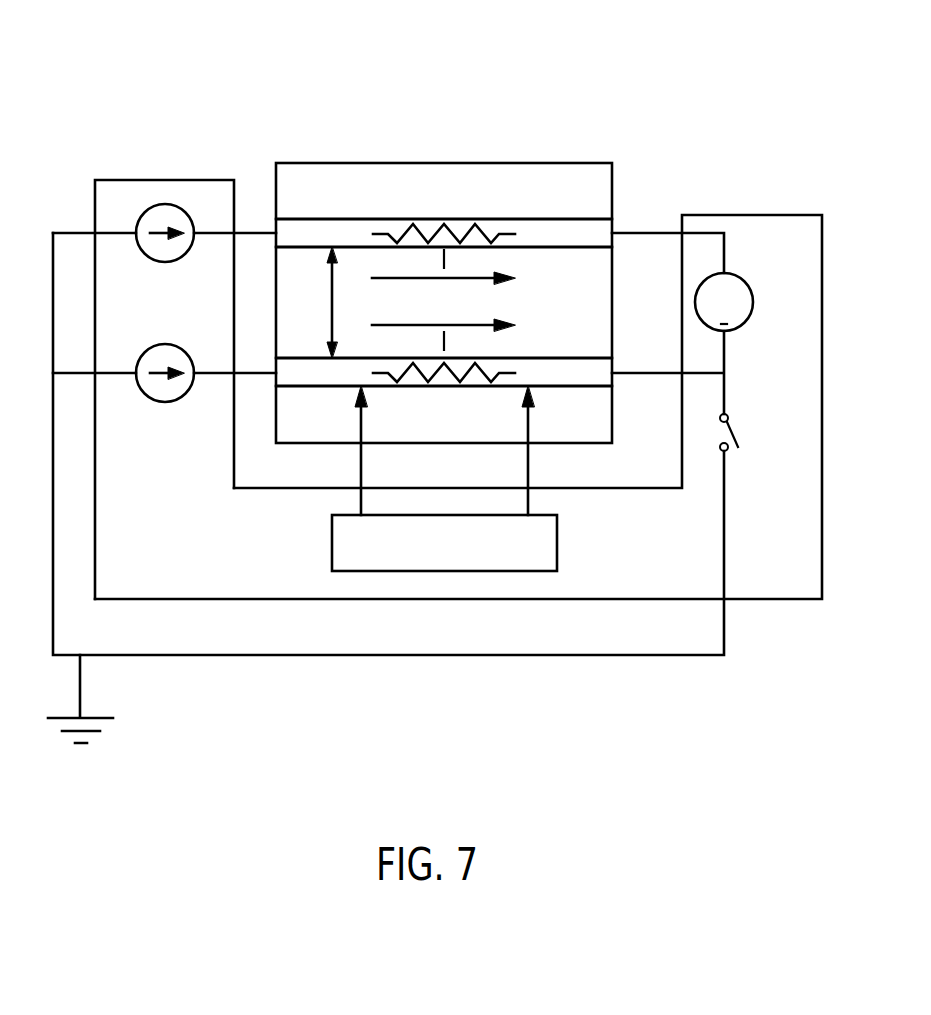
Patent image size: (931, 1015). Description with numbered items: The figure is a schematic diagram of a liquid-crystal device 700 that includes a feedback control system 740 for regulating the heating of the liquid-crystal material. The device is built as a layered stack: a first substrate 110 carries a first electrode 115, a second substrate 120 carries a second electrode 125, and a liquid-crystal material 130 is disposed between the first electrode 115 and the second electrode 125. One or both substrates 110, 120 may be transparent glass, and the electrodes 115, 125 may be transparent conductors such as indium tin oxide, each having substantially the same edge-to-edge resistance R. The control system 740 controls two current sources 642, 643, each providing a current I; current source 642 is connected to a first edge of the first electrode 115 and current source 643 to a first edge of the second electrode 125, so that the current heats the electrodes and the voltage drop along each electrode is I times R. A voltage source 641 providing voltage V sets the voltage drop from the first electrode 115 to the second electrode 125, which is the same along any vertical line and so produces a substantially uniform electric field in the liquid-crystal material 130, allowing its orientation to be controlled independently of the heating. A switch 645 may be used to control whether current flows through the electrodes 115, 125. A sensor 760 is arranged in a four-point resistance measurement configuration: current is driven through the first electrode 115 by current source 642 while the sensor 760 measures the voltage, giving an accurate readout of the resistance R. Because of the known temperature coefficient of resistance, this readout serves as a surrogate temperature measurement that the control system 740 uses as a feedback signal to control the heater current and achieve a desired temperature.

The LC device 700 is at (452, 86).
The feedback control system 740 is at (135, 180).
The current source 643 is at (167, 217).
The current source 642 is at (167, 357).
The second substrate 120 is at (525, 175).
The second electrode 125 is at (552, 233).
The liquid-crystal material 130 is at (598, 307).
The first electrode 115 is at (552, 375).
The first substrate 110 is at (558, 423).
The voltage source 641 is at (743, 303).
The switch 645 is at (737, 435).
The sensor 760 is at (558, 542).